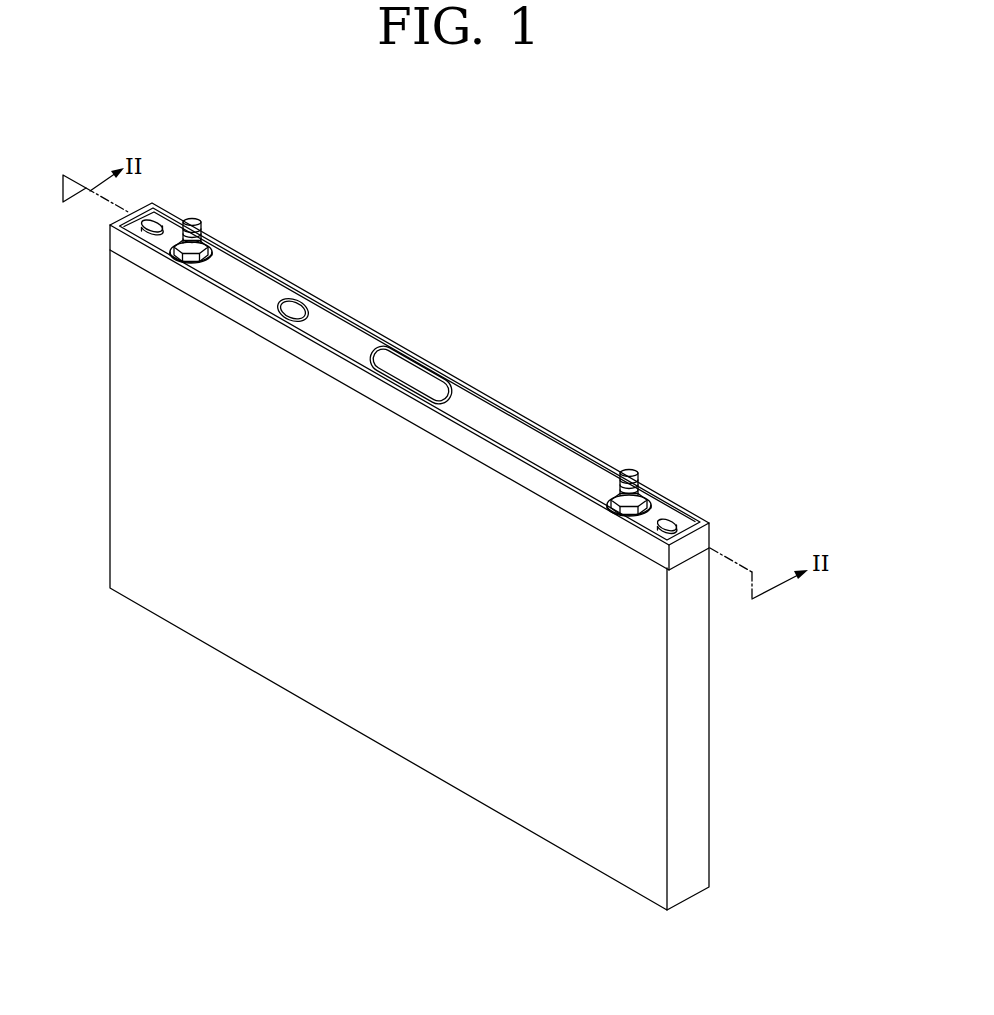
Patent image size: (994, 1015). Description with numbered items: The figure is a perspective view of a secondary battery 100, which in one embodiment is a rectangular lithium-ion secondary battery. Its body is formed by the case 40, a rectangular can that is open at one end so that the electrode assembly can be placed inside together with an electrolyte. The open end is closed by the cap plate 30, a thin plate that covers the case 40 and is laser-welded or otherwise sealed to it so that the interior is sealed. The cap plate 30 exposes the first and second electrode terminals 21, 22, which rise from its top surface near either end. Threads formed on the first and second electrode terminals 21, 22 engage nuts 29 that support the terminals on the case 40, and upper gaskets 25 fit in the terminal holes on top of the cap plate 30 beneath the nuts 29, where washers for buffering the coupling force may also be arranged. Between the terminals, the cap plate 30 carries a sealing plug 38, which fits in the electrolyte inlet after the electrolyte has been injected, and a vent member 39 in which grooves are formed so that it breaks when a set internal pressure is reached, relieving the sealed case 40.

The secondary battery 100 is at (600, 343).
The case 40 is at (377, 717).
The cap plate 30 is at (343, 338).
The first electrode terminal 21 is at (192, 220).
The second electrode terminal 22 is at (630, 472).
The upper gasket 25 is at (655, 508).
The nut 29 is at (642, 492).
The sealing plug 38 is at (293, 303).
The vent member 39 is at (416, 375).